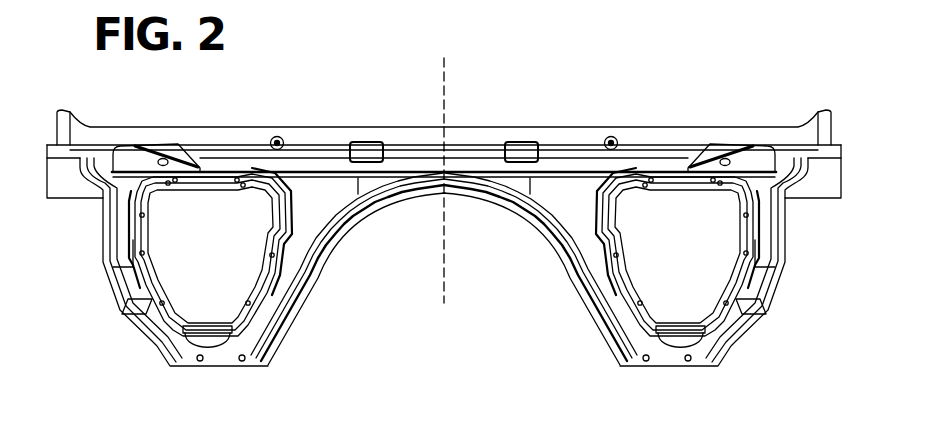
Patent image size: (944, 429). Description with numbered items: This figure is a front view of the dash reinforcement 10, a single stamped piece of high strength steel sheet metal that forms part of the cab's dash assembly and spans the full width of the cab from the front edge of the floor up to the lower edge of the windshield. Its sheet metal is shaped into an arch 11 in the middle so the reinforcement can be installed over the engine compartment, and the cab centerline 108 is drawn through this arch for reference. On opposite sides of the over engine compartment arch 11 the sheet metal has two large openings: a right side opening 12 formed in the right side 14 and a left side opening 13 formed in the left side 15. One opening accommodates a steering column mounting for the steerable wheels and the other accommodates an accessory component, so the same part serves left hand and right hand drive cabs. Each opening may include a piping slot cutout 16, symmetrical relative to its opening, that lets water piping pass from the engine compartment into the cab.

The dash reinforcement 10 is at (716, 90).
The arch 11 is at (324, 292).
The right side opening 12 is at (200, 280).
The left side opening 13 is at (675, 259).
The right side 14 is at (125, 242).
The left side 15 is at (770, 228).
The piping slot cutout 16 is at (267, 180).
The centerline 108 is at (438, 86).